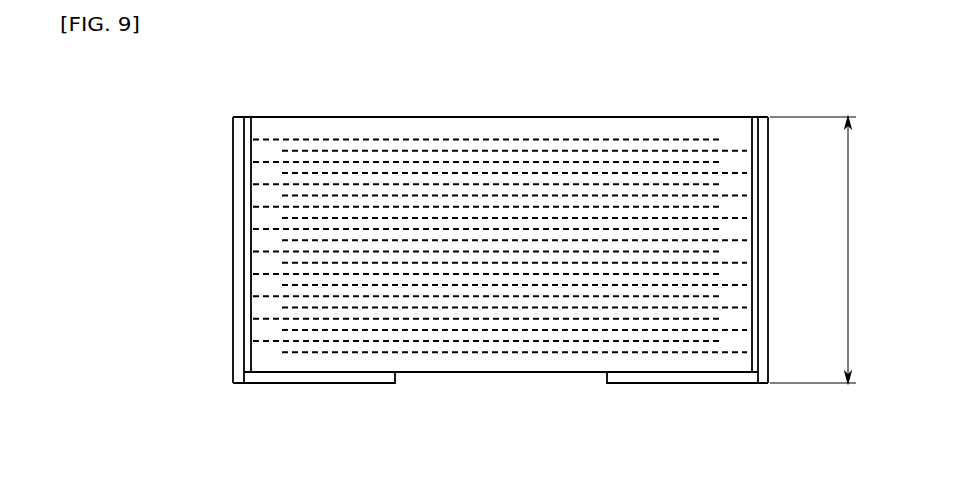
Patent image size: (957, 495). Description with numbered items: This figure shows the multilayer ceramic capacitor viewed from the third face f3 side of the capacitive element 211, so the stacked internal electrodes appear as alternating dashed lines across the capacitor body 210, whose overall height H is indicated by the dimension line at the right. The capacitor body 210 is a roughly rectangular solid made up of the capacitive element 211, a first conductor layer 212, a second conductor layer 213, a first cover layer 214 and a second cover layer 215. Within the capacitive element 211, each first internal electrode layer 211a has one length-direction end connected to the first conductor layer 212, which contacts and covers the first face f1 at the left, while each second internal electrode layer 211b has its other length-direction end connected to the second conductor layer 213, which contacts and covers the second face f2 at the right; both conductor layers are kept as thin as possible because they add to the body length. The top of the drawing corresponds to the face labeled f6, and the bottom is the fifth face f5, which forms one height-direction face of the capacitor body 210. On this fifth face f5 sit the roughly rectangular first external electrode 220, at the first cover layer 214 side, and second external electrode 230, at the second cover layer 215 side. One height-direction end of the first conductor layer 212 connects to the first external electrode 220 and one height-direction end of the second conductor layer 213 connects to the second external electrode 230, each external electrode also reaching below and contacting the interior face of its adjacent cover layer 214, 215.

The capacitor body 210 is at (244, 117).
The capacitive element 211 is at (491, 117).
The first internal electrode layer 211a is at (597, 138).
The second internal electrode layer 211b is at (672, 149).
The first conductor layer 212 is at (247, 193).
The second conductor layer 213 is at (754, 185).
The first cover layer 214 is at (238, 228).
The second cover layer 215 is at (764, 230).
The first external electrode 220 is at (327, 378).
The second external electrode 230 is at (672, 378).
The first face f1 is at (255, 117).
The second face f2 is at (751, 117).
The third face f3 is at (451, 187).
The fifth face f5 is at (540, 373).
The sixth surface f6 is at (537, 117).
The height H is at (818, 250).